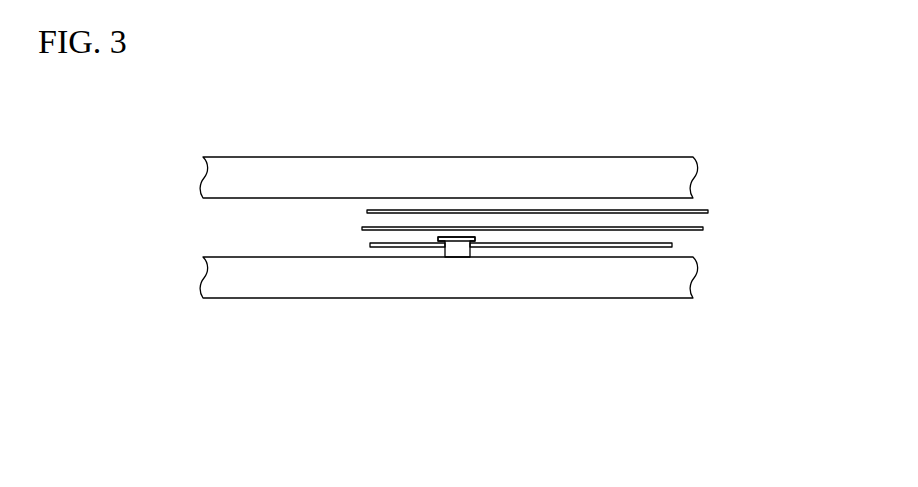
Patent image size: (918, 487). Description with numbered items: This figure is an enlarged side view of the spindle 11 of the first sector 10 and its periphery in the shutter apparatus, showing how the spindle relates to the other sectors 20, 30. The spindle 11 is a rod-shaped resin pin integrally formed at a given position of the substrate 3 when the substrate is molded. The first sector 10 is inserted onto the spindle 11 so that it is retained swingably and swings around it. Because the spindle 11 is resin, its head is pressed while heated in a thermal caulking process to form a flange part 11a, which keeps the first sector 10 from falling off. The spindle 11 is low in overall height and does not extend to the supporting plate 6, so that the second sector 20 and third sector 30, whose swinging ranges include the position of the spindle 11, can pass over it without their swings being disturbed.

The substrate 3 is at (649, 283).
The supporting plate 6 is at (548, 168).
The first sector 10 is at (668, 247).
The spindle 11 is at (457, 249).
The flange part 11a is at (438, 237).
The second sector 20 is at (703, 228).
The third sector 30 is at (706, 210).